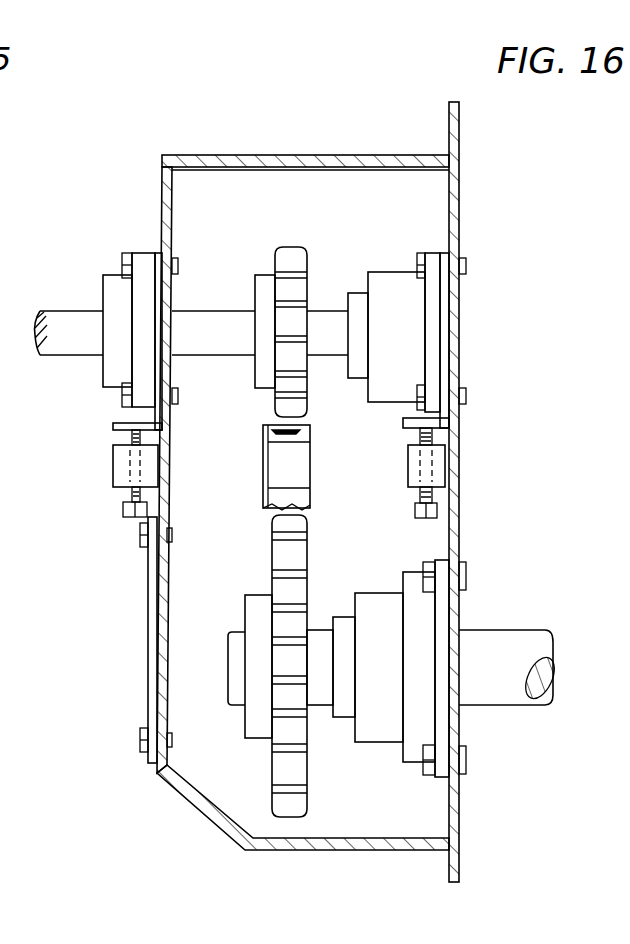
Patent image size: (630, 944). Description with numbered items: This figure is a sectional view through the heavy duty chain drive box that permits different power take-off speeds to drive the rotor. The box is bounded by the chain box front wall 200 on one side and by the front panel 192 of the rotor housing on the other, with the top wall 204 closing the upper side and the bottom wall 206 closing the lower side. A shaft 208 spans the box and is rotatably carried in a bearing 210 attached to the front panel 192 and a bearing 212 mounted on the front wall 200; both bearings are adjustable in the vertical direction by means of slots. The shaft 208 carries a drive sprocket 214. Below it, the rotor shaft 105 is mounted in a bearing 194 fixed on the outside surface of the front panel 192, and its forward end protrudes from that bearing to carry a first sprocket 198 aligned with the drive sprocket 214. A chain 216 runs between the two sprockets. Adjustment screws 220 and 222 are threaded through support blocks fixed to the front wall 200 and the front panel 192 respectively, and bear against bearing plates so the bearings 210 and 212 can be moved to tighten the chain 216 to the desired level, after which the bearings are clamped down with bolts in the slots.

The rotor shaft 105 is at (548, 587).
The front panel 192 is at (455, 545).
The bearing 194 is at (383, 603).
The first sprocket 198 is at (277, 553).
The chain box front wall 200 is at (163, 187).
The top wall 204 is at (228, 155).
The bottom wall 206 is at (288, 848).
The shaft 208 is at (208, 316).
The bearing 210 is at (431, 260).
The bearing 212 is at (103, 286).
The drive sprocket 214 is at (295, 257).
The chain 216 is at (308, 465).
The adjustment screw 220 is at (132, 437).
The adjustment screw 222 is at (436, 437).